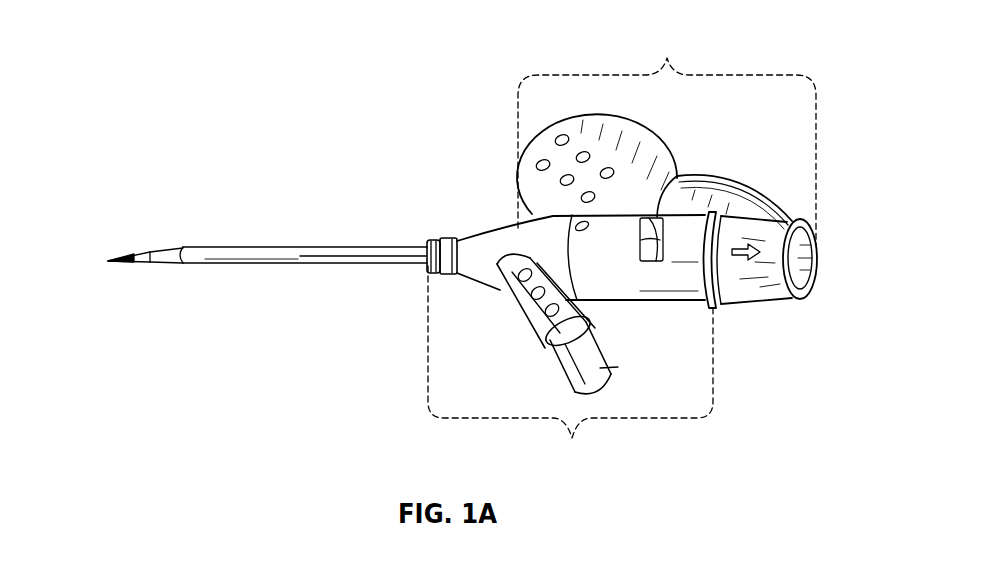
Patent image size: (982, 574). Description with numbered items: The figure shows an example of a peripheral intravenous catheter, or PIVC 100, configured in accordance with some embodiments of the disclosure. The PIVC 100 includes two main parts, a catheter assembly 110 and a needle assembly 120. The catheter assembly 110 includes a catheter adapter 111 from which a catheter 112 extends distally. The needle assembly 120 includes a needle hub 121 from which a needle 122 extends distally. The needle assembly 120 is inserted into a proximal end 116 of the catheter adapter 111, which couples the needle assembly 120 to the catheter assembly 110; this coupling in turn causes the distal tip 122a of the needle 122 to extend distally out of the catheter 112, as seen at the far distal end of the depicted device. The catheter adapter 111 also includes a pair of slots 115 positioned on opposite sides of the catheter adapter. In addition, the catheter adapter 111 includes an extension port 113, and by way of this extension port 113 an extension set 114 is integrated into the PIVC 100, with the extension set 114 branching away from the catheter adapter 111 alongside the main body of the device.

The PIVC 100 is at (790, 22).
The catheter assembly 110 is at (338, 320).
The catheter adapter 111 is at (570, 343).
The catheter 112 is at (398, 236).
The extension port 113 is at (512, 305).
The extension set 114 is at (586, 368).
The pair of slots 115 is at (687, 177).
The proximal end 116 is at (712, 320).
The needle assembly 120 is at (467, 119).
The needle hub 121 is at (667, 58).
The needle 122 is at (140, 274).
The distal tip 122a is at (128, 252).